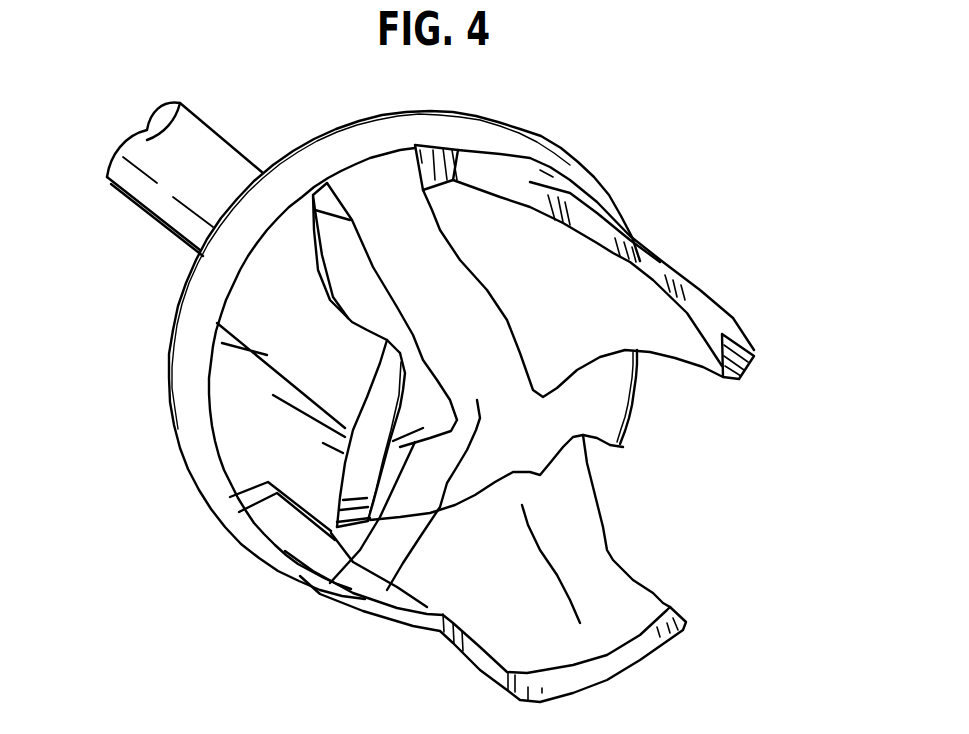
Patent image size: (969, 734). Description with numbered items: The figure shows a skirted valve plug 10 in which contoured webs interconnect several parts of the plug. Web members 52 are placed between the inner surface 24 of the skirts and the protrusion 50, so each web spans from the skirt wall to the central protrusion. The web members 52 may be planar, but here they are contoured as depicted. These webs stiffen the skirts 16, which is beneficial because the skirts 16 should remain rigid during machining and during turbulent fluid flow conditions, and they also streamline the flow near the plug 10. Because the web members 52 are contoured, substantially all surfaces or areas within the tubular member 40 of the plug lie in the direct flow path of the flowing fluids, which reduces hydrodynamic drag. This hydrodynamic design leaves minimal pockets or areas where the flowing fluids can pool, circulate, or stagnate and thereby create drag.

The plug 10 is at (315, 140).
The skirts 16 is at (233, 398).
The inner surface of the skirts 24 is at (647, 603).
The tubular member 40 is at (663, 257).
The protrusion 50 is at (387, 590).
The web members 52 is at (330, 583).